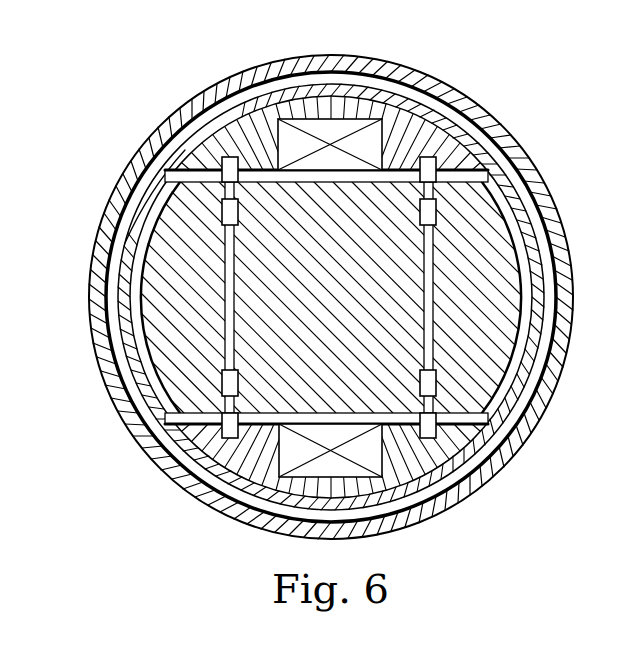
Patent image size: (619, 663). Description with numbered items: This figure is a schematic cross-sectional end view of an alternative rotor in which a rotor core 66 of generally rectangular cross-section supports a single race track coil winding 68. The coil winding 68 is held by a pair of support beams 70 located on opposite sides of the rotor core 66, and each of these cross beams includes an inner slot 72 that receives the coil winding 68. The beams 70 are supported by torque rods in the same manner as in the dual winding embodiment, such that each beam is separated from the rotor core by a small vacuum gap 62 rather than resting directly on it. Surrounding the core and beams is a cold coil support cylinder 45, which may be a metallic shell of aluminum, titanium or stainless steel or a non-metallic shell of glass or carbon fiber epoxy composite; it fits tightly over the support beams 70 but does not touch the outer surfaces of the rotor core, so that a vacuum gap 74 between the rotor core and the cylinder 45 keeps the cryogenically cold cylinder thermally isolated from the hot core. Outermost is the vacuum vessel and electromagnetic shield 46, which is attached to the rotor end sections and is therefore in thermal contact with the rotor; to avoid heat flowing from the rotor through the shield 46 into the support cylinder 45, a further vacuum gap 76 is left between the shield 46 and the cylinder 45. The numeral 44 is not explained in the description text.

The rotor 44 is at (331, 297).
The cold coil support cylinder 45 is at (183, 440).
The vacuum vessel and electromagnetic shield 46 is at (118, 396).
The vacuum gap 62 is at (472, 174).
The rotor core 66 is at (346, 304).
The race track coil winding 68 is at (290, 452).
The support beams 70 is at (413, 137).
The inner slot 72 is at (385, 440).
The vacuum gap 74 is at (133, 302).
The vacuum gap 76 is at (118, 242).